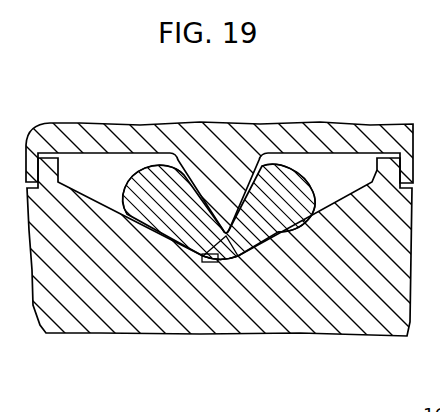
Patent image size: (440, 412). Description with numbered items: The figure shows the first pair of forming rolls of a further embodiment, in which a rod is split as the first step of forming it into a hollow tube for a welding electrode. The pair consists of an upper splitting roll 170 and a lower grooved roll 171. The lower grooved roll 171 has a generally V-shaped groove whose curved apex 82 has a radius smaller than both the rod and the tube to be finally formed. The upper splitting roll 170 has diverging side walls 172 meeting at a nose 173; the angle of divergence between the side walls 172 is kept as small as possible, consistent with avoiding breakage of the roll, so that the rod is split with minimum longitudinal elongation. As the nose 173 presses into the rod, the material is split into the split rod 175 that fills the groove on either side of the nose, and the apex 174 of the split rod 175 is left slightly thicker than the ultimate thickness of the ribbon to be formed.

The upper splitting roll 170 is at (206, 118).
The lower grooved roll 171 is at (250, 336).
The side walls 172 is at (187, 178).
The nose 173 is at (233, 236).
The apex 174 is at (210, 240).
The split rod 175 is at (278, 210).
The curved apex 82 is at (204, 256).